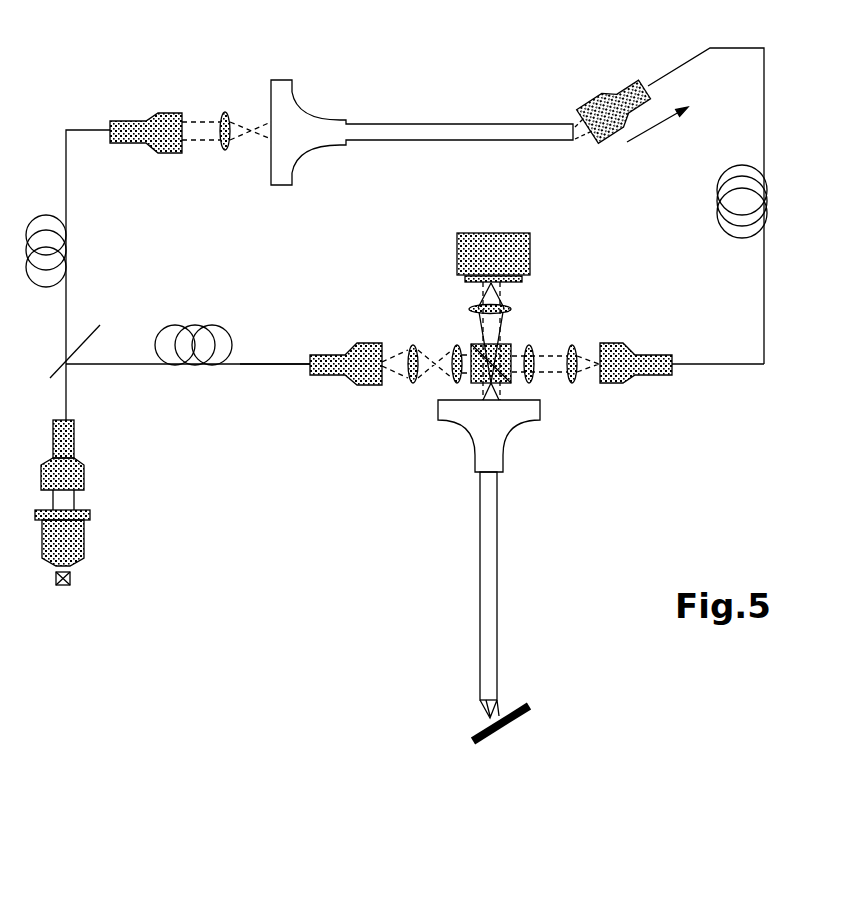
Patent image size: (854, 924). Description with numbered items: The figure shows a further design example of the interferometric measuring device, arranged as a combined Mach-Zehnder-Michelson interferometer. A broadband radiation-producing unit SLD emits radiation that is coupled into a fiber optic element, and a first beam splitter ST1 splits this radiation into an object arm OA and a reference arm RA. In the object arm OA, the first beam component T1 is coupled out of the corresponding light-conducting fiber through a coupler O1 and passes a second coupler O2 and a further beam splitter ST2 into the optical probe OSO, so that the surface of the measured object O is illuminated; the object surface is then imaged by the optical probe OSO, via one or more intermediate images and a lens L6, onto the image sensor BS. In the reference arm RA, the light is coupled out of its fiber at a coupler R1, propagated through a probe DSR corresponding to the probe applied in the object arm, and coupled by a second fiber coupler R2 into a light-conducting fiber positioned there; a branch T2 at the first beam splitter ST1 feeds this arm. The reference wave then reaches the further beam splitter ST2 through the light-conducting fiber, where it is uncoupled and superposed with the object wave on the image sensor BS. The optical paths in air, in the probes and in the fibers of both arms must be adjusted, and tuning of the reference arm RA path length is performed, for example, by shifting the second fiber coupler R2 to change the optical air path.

The reference arm RA is at (86, 130).
The first fiber coupler of reference arm R1 is at (141, 148).
The reference scanning probe / disposable sheath reference DSR is at (431, 122).
The second fiber coupler R2 is at (620, 86).
The second fiber branch T2 is at (62, 326).
The first beam splitter ST1 is at (74, 353).
The object arm OA is at (152, 368).
The first beam component T1 is at (275, 368).
The broadband radiation-producing unit SLD is at (86, 540).
The first fiber coupler of object arm O1 is at (337, 386).
The further beam splitter ST2 is at (510, 343).
The image sensor BS is at (532, 248).
The lens L6 is at (468, 309).
The second fiber coupler of object arm O2 is at (648, 378).
The optical probe OSO is at (497, 556).
The measured object O is at (521, 722).